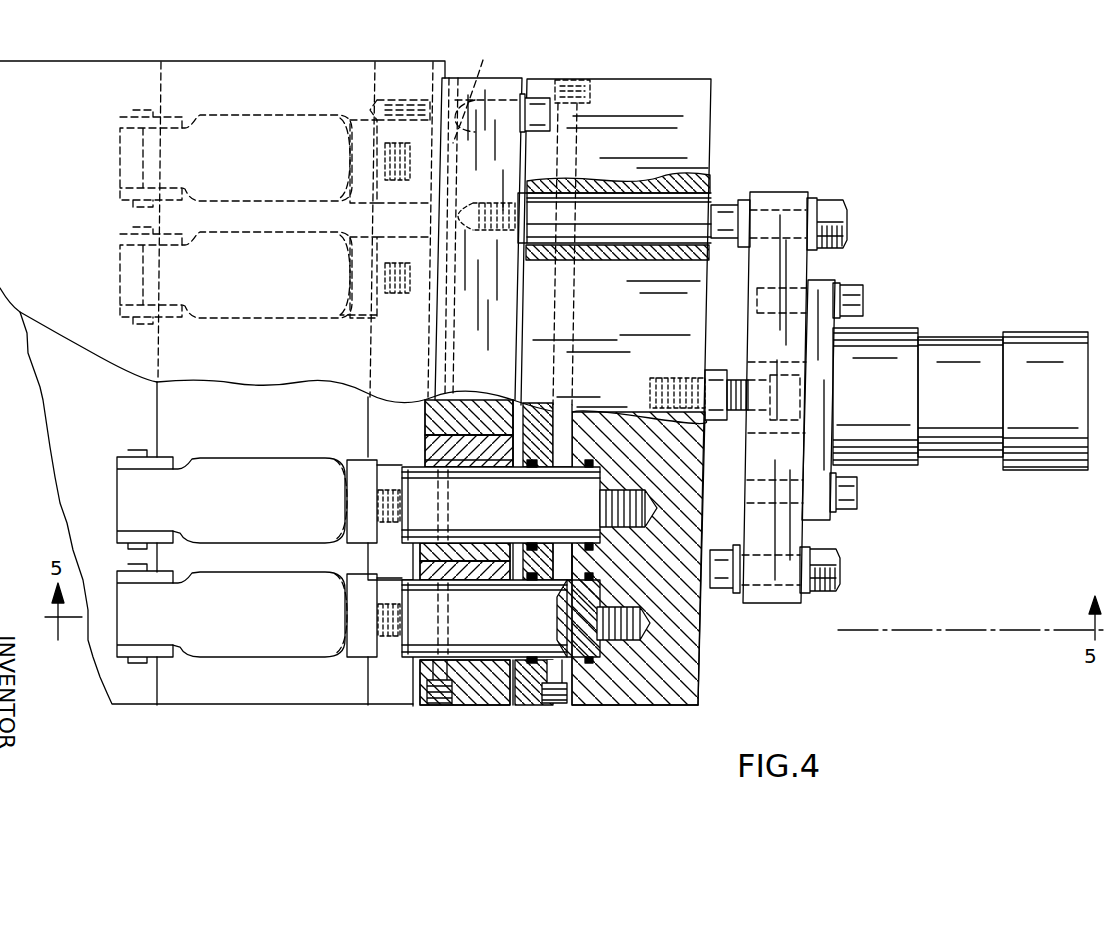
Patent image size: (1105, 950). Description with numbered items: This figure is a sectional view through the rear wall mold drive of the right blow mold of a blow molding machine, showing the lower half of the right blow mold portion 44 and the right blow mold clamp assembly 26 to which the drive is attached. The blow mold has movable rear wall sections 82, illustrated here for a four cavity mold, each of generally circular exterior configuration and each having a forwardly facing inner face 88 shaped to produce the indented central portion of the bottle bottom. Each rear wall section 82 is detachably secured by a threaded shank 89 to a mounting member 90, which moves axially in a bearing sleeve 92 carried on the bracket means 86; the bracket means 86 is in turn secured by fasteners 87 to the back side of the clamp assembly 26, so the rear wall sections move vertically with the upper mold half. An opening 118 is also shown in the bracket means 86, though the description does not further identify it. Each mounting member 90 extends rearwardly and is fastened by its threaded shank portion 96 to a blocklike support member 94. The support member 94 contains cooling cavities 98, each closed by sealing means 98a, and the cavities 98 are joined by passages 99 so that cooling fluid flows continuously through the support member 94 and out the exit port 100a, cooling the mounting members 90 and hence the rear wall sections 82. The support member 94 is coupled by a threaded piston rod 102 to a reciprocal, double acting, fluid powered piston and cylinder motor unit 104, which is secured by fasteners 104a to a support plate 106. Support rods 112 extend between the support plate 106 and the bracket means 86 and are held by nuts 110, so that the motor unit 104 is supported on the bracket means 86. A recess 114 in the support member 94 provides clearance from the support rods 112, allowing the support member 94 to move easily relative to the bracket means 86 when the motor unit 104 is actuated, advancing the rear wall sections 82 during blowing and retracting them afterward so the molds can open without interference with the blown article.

The right blow mold clamp assembly 26 is at (131, 62).
The lower half of the right blow mold portion 44 is at (160, 415).
The rear wall section 82 is at (348, 147).
The bracket means 86 is at (512, 78).
The fasteners 87 is at (540, 97).
The inner face 88 is at (348, 172).
The threaded shank 89 is at (387, 165).
The mounting member 90 is at (495, 625).
The bearing sleeve 92 is at (423, 463).
The support member 94 is at (676, 693).
The threaded shank portion 96 is at (620, 642).
The cavity 98 is at (565, 467).
The sealing means 98a is at (567, 623).
The passages 99 is at (567, 303).
The exit port 100a is at (590, 84).
The threaded piston rod 102 is at (682, 375).
The piston and cylinder motor unit 104 is at (958, 340).
The fasteners 104a is at (850, 300).
The support plate 106 is at (777, 595).
The nuts 110 is at (835, 207).
The support rods 112 is at (723, 207).
The recess 114 is at (708, 180).
The hole 118 is at (458, 140).